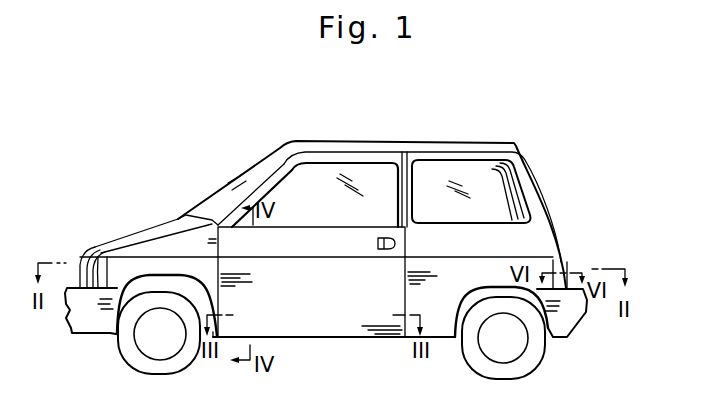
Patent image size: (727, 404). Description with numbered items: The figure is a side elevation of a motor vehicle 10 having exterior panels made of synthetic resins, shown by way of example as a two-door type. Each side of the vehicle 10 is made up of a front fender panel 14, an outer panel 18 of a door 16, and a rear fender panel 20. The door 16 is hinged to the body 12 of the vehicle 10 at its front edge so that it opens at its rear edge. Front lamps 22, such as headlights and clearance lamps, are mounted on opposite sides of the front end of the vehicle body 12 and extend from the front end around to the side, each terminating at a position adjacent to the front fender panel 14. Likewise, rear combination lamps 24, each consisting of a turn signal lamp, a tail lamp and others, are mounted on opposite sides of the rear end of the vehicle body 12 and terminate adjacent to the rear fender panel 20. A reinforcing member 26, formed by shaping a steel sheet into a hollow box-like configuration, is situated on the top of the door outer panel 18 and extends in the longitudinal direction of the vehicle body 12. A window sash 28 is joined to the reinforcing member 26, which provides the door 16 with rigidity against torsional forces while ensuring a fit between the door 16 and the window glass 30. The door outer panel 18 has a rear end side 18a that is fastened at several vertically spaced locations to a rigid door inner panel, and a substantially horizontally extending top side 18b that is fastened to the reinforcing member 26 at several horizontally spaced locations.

The motor vehicle 10 is at (542, 146).
The body 12 is at (371, 346).
The front fender panel 14 is at (166, 265).
The door 16 is at (297, 342).
The door outer panel 18 is at (333, 310).
The rear end side of door outer panel 18a is at (400, 300).
The top side of door outer panel 18b is at (302, 262).
The rear fender panel 20 is at (447, 308).
The front lamp 22 is at (93, 247).
The rear combination lamp 24 is at (563, 270).
The reinforcing member 26 is at (307, 240).
The window sash 28 is at (310, 151).
The window glass 30 is at (380, 182).